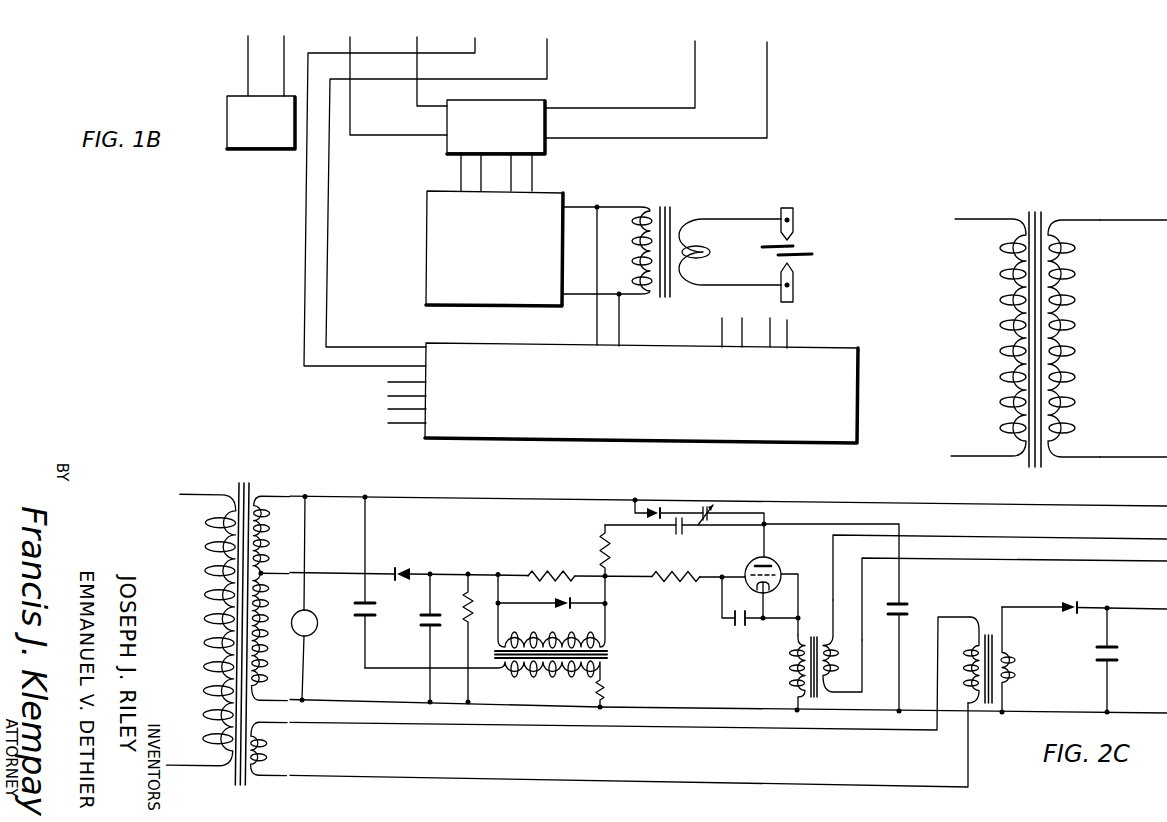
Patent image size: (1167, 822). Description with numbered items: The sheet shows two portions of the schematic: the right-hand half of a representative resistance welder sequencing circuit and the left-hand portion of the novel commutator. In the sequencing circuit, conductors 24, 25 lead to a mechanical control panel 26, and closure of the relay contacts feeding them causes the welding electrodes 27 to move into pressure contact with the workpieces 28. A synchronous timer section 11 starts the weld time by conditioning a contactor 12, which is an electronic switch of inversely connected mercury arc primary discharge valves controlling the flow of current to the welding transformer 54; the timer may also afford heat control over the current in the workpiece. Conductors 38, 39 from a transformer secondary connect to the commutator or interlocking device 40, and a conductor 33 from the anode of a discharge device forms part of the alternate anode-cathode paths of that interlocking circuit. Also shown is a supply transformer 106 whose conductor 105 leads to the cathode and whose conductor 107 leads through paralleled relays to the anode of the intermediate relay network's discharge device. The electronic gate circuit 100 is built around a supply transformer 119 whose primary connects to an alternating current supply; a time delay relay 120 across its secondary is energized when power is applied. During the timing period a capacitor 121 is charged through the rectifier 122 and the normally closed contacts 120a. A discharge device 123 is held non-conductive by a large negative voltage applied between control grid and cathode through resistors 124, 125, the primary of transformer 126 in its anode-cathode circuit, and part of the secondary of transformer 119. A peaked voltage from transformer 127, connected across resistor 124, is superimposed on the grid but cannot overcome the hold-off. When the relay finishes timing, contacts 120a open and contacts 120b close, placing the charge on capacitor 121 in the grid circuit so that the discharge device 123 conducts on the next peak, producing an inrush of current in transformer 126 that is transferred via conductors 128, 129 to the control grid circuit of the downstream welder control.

In FIG. 1B, the conductor 24 is at (248, 64).
In FIG. 1B, the conductor 25 is at (284, 64).
In FIG. 1B, the mechanical control panel 26 is at (263, 132).
In FIG. 1B, the conductor 39 is at (477, 46).
In FIG. 1B, the conductor 38 is at (549, 47).
In FIG. 1B, the synchronous timer section 11 is at (497, 135).
In FIG. 1B, the contactor 12 is at (499, 264).
In FIG. 1B, the welding transformer 54 is at (673, 212).
In FIG. 1B, the welding electrodes 27 is at (791, 219).
In FIG. 1B, the workpieces 28 is at (805, 253).
In FIG. 1B, the commutator or interlocking device 40 is at (651, 408).
In FIG. 1B, the conductor 105 is at (1129, 457).
In FIG. 1B, the supply transformer 106 is at (1035, 212).
In FIG. 1B, the conductor 107 is at (1117, 220).
In FIG. 2C, the supply transformer 119 is at (243, 483).
In FIG. 2C, the electronic gate circuit 100 is at (381, 487).
In FIG. 2C, the time delay relay 120 is at (305, 598).
In FIG. 2C, the rectifier 122 is at (652, 506).
In FIG. 2C, the normally closed contacts 120a is at (718, 511).
In FIG. 2C, the contacts 120b is at (684, 537).
In FIG. 2C, the discharge device 123 is at (781, 566).
In FIG. 2C, the resistor 124 is at (556, 574).
In FIG. 2C, the resistor 125 is at (683, 581).
In FIG. 2C, the transformer 127 is at (612, 655).
In FIG. 2C, the transformer 126 is at (793, 669).
In FIG. 2C, the capacitor 121 is at (907, 606).
In FIG. 2C, the conductor 128 is at (1055, 531).
In FIG. 2C, the conductor 129 is at (1022, 560).
In FIG. 2C, the conductor 33 is at (1012, 679).